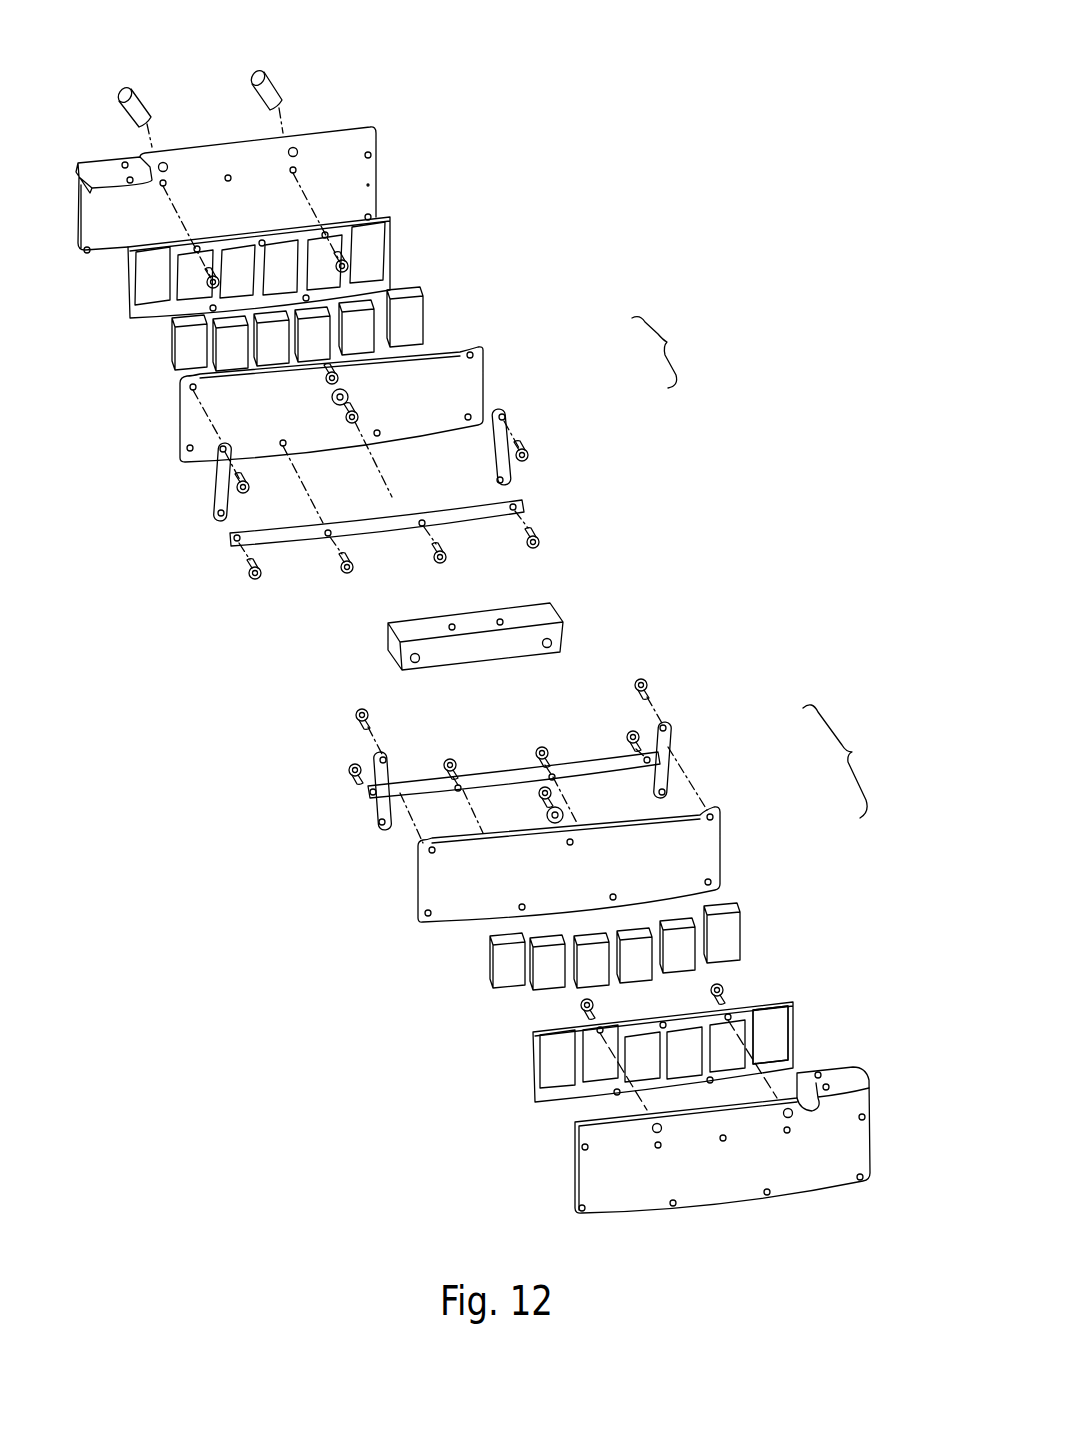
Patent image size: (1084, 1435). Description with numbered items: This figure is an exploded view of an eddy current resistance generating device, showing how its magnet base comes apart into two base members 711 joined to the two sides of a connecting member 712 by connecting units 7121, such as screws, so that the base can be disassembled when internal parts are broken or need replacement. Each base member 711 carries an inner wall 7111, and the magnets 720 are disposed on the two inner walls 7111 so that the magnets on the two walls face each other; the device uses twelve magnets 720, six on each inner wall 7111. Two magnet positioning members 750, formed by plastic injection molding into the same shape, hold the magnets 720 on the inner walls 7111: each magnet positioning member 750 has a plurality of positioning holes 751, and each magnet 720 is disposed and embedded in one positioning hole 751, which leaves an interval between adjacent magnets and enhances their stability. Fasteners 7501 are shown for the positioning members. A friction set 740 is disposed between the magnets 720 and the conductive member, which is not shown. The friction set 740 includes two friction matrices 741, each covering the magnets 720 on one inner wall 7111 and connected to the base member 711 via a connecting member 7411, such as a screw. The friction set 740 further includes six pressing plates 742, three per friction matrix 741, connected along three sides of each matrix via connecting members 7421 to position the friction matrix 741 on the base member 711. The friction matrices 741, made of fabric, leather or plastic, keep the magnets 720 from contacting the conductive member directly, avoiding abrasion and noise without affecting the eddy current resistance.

The base member 711 is at (355, 130).
The inner wall 7111 is at (371, 180).
The connecting unit 7121 is at (125, 88).
The connecting member 712 is at (558, 612).
The magnet 720 is at (415, 305).
The friction set 740 is at (771, 566).
The friction matrix 741 is at (485, 380).
The connecting member 7411 is at (348, 393).
The pressing plate 742 is at (505, 435).
The connecting member 7421 is at (530, 455).
The magnet positioning member 750 is at (393, 237).
The frame screw 7501 is at (205, 280).
The positioning hole 751 is at (770, 1020).